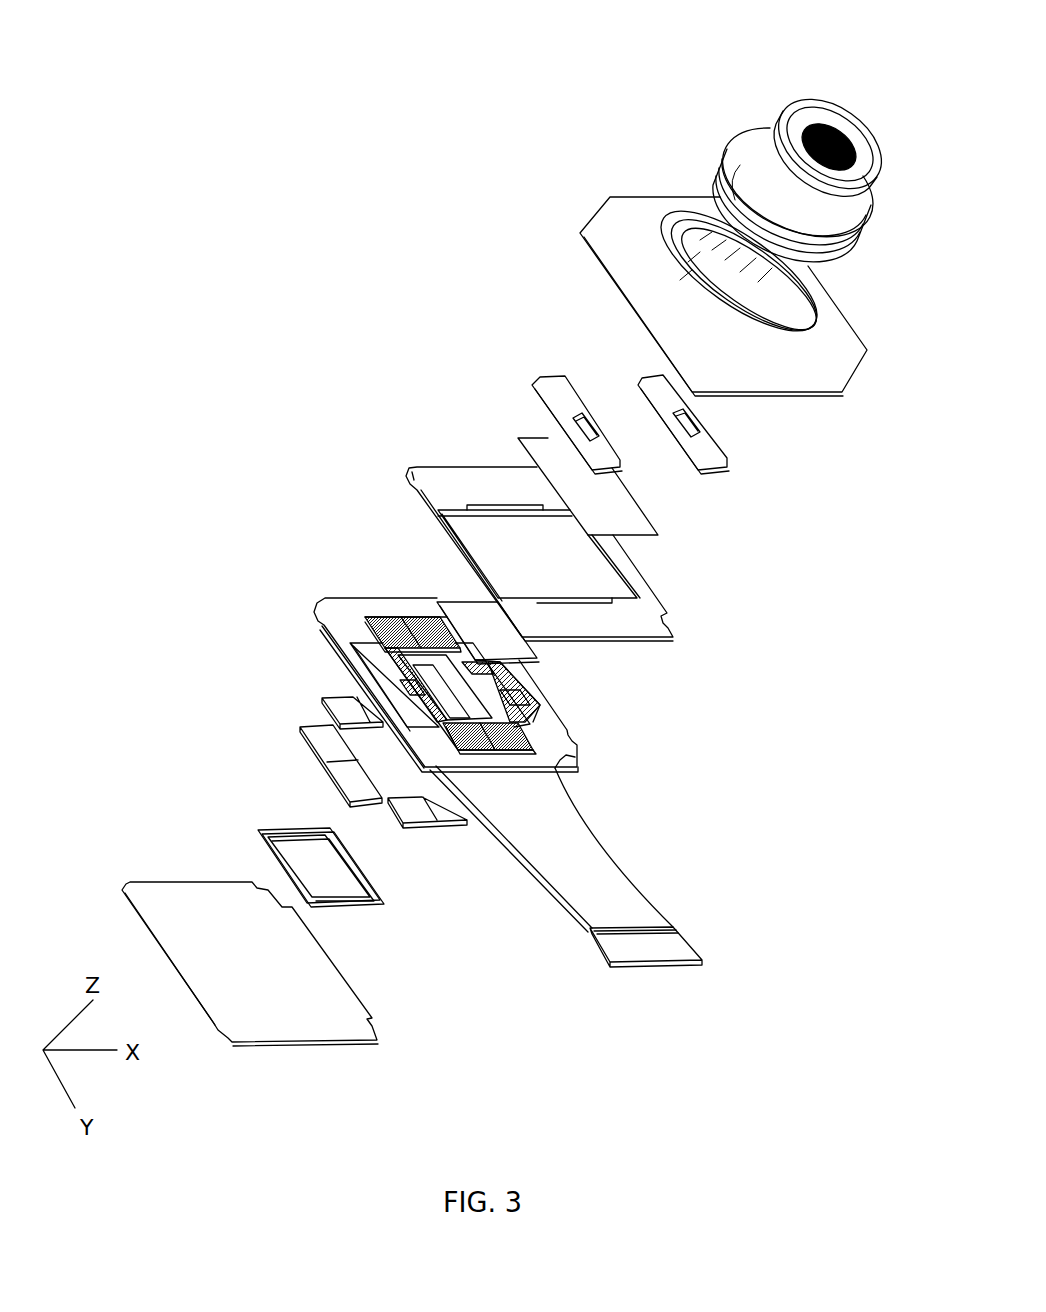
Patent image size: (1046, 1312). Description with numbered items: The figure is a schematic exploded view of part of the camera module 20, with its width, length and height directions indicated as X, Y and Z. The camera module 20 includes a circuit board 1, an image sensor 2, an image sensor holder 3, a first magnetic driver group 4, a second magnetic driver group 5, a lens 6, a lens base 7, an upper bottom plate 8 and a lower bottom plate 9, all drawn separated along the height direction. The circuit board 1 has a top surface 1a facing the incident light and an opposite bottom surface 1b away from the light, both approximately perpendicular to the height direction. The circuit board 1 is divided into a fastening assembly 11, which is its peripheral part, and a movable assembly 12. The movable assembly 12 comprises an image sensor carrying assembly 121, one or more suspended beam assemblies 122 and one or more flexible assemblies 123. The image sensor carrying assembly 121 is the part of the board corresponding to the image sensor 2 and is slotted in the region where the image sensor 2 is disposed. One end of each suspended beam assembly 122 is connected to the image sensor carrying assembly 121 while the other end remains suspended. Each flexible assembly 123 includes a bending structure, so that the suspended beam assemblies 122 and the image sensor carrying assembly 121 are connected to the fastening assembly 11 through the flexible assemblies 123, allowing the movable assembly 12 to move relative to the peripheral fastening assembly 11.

The camera module 20 is at (108, 31).
The circuit board 1 is at (317, 588).
The top surface 1a is at (380, 613).
The bottom surface 1b is at (327, 650).
The image sensor 2 is at (470, 607).
The image sensor holder 3 is at (285, 829).
The first magnetic driver group 4 is at (322, 698).
The second magnetic driver group 5 is at (538, 368).
The lens 6 is at (715, 163).
The lens base 7 is at (580, 232).
The upper bottom plate 8 is at (452, 460).
The lower bottom plate 9 is at (178, 875).
The fastening assembly 11 is at (555, 768).
The movable assembly 12 is at (606, 712).
The image sensor carrying assembly 121 is at (525, 736).
The suspended beam assembly 122 is at (540, 683).
The flexible assembly 123 is at (548, 710).